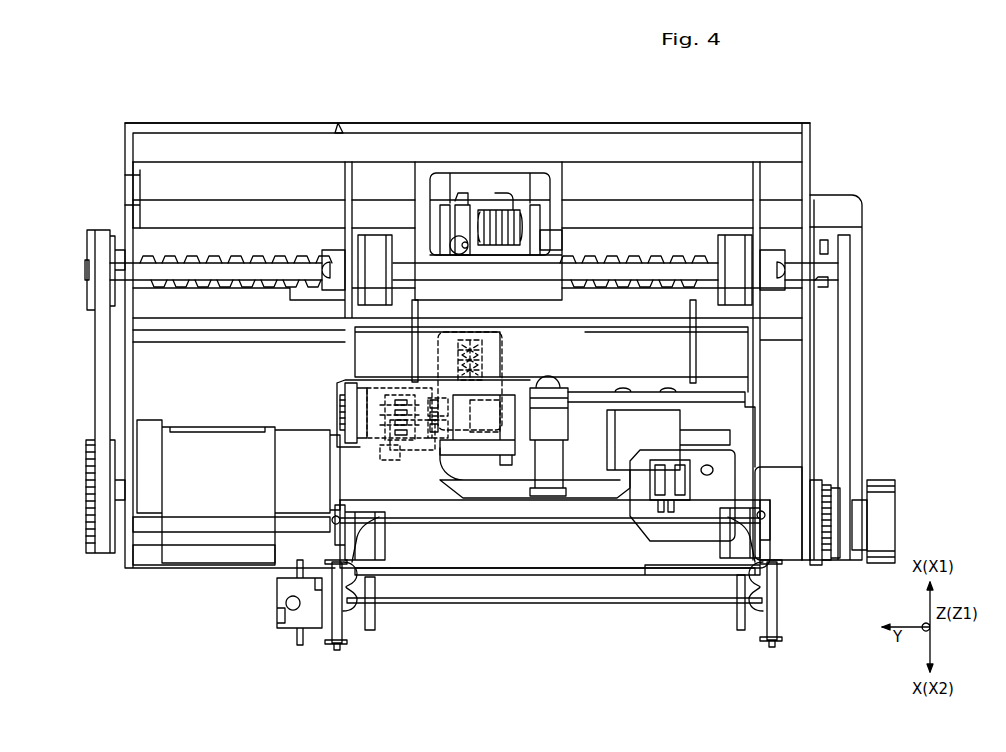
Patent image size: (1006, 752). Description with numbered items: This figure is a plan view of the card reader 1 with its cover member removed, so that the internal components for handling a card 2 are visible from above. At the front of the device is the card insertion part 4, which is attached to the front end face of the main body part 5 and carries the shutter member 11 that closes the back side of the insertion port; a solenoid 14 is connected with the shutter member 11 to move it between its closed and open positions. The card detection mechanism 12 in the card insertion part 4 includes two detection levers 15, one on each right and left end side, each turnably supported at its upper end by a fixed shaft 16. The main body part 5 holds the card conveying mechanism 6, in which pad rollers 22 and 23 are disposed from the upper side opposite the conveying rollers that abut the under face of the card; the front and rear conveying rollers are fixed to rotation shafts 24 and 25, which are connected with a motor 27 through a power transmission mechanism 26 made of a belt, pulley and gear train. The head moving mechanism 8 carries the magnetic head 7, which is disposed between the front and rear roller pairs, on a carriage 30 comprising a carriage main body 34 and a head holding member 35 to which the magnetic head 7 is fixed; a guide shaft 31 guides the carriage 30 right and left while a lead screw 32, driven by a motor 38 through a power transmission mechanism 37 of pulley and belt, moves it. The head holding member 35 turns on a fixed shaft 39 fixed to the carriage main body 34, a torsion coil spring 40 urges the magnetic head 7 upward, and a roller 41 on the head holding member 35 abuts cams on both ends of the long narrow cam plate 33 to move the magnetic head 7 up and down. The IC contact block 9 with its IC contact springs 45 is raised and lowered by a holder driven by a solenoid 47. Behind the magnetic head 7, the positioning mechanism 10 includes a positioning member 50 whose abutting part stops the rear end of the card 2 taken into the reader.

The card reader 1 is at (954, 103).
The card 2 is at (515, 567).
The card insertion part 4 is at (415, 638).
The main body part 5 is at (874, 186).
The card conveying mechanism 6 is at (905, 384).
The magnetic head 7 is at (505, 367).
The head moving mechanism 8 is at (315, 184).
The IC contact block 9 is at (388, 445).
The positioning mechanism 10 is at (368, 361).
The shutter member 11 is at (610, 603).
The card detection mechanism 12 is at (806, 627).
The solenoid 14 is at (276, 596).
The detection lever 15 is at (310, 647).
The fixed shaft 16 is at (337, 647).
The pad roller 22 is at (384, 540).
The pad roller 23 is at (375, 233).
The rotation shaft 24 is at (216, 512).
The rotation shaft 25 is at (222, 290).
The power transmission mechanism 26 is at (878, 449).
The motor 27 is at (668, 575).
The carriage 30 is at (562, 185).
The carriage main body 34 is at (490, 214).
The guide shaft 31 is at (178, 190).
The lead screw 32 is at (244, 253).
The cam plate 33 is at (185, 320).
The head holding member 35 is at (557, 245).
The power transmission mechanism 37 is at (80, 378).
The motor 38 is at (177, 568).
The fixed shaft 39 is at (465, 200).
The torsion coil spring 40 is at (506, 195).
The roller 41 is at (500, 305).
The IC contact spring 45 is at (346, 413).
The solenoid 47 is at (638, 405).
The positioning member 50 is at (412, 343).